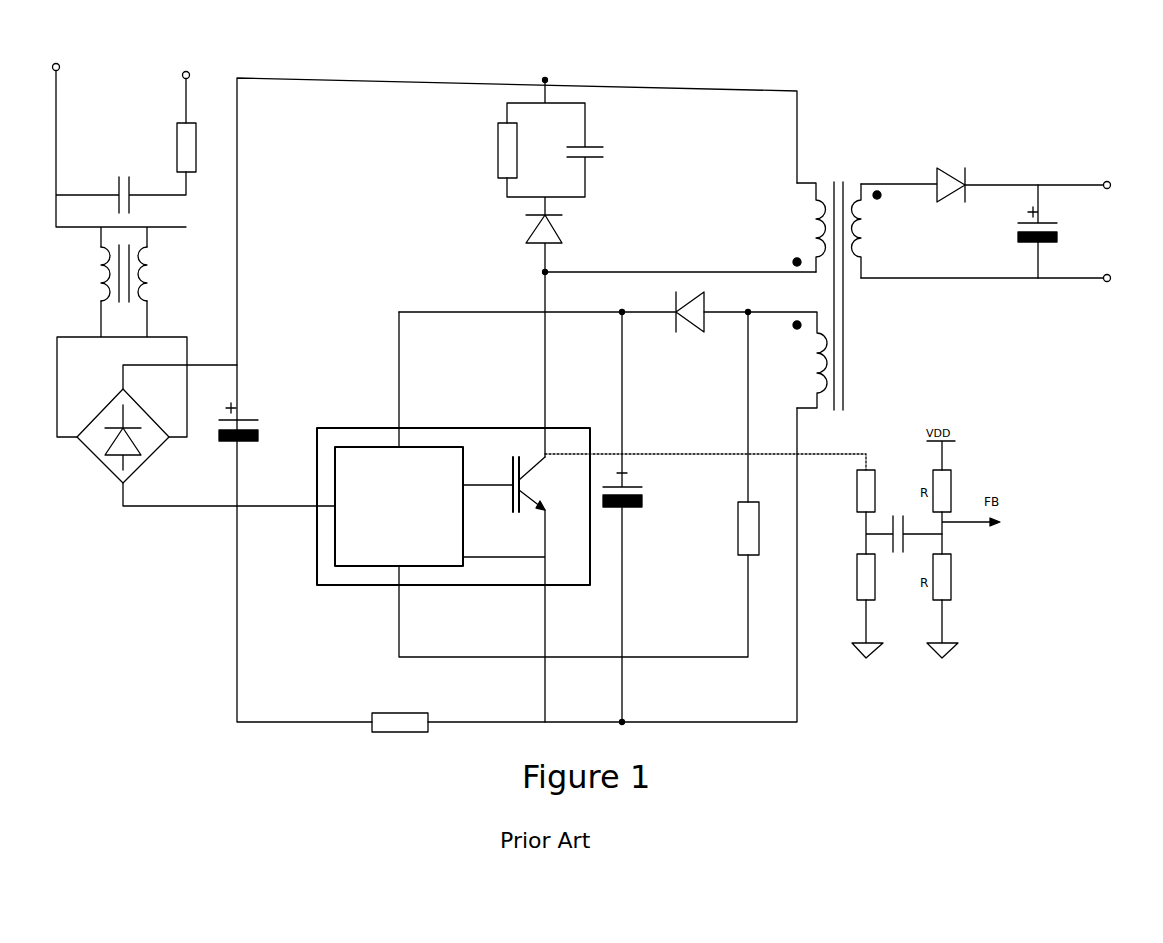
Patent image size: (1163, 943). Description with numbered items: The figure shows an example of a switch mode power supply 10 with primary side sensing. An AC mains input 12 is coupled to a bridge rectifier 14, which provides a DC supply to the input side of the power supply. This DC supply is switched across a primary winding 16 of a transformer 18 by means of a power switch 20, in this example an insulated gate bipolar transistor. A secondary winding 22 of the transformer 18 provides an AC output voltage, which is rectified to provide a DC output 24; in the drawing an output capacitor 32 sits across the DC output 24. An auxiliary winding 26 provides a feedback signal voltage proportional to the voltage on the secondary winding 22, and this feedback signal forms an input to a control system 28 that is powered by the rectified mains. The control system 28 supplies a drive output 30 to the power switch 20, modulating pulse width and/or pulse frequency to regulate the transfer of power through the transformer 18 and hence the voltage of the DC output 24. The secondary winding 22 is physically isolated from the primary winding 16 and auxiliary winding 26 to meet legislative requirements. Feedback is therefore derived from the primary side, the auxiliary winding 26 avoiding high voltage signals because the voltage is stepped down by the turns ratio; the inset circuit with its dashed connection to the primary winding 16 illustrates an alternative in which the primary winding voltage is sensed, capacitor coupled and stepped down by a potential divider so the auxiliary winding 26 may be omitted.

The flyback power converter 10 is at (163, 735).
The AC input 12 is at (130, 88).
The bridge rectifier 14 is at (105, 465).
The primary winding 16 is at (801, 187).
The transformer 18 is at (807, 283).
The power switch 20 is at (552, 493).
The secondary winding 22 is at (882, 183).
The DC output 24 is at (986, 211).
The auxiliary winding 26 is at (805, 410).
The control system 28 is at (353, 567).
The drive output 30 is at (482, 486).
The output capacitor 32 is at (1050, 243).